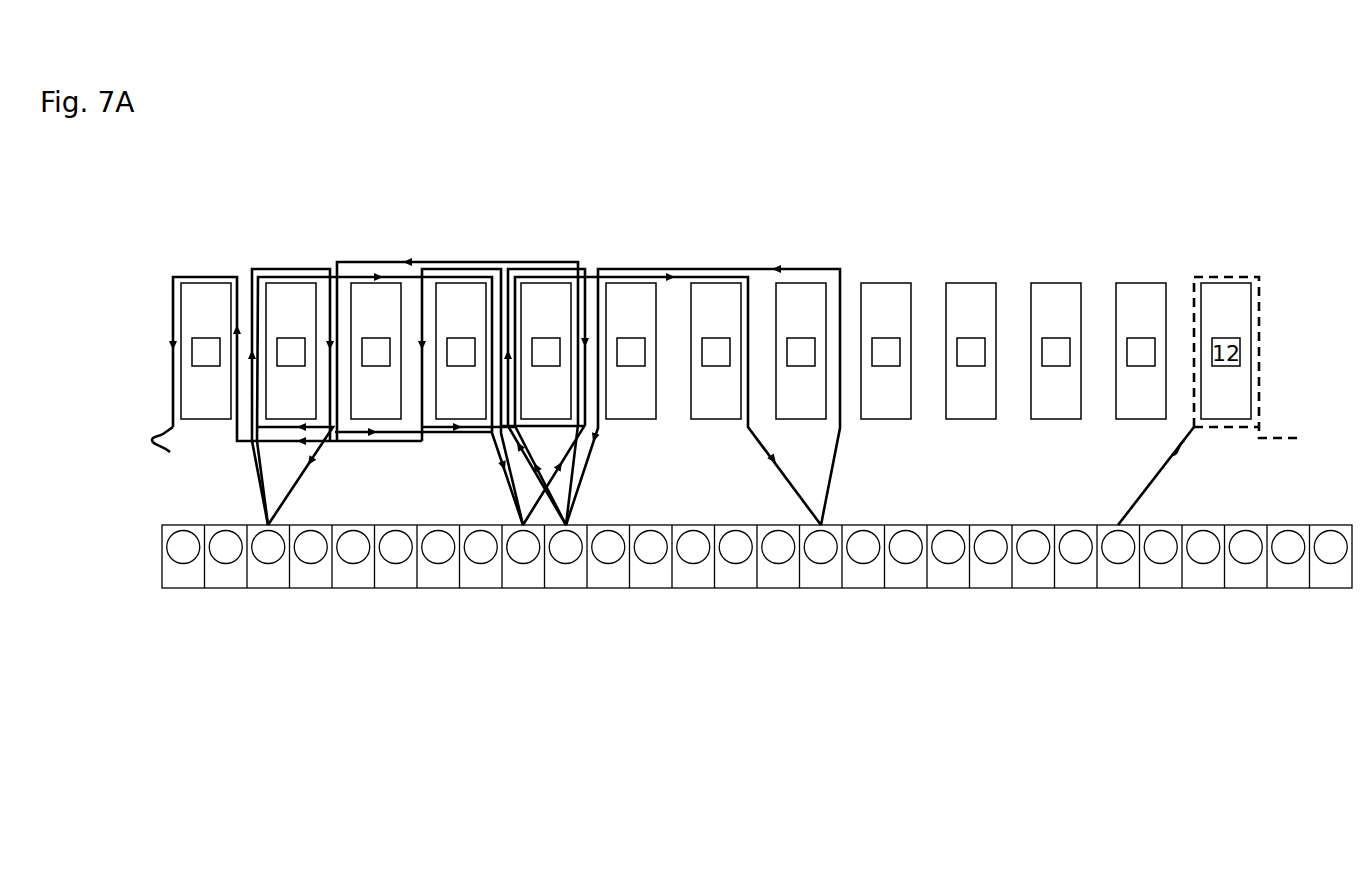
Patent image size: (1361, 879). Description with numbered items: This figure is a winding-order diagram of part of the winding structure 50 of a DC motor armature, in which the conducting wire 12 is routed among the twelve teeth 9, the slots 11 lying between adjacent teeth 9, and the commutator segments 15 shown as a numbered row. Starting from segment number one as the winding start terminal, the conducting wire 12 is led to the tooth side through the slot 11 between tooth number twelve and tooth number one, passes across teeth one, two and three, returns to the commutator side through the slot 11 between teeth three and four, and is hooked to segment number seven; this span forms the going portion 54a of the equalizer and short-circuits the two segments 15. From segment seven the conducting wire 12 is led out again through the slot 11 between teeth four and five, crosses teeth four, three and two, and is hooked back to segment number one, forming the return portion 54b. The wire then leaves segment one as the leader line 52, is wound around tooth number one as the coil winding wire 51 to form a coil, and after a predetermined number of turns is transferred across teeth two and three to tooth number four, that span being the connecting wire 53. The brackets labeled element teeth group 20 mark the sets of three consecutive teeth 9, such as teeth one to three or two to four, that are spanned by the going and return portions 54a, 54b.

The tooth 9 is at (884, 282).
The slot 11 is at (1015, 282).
The conducting wire 12 is at (629, 282).
The segment 15 is at (397, 589).
The element teeth group 20 is at (252, 206).
The winding structure 50 is at (876, 199).
The coil winding wire 51 is at (204, 275).
The leader line 52 is at (255, 468).
The connecting wire 53 is at (348, 445).
The going portion 54a is at (368, 262).
The return portion 54b is at (437, 268).